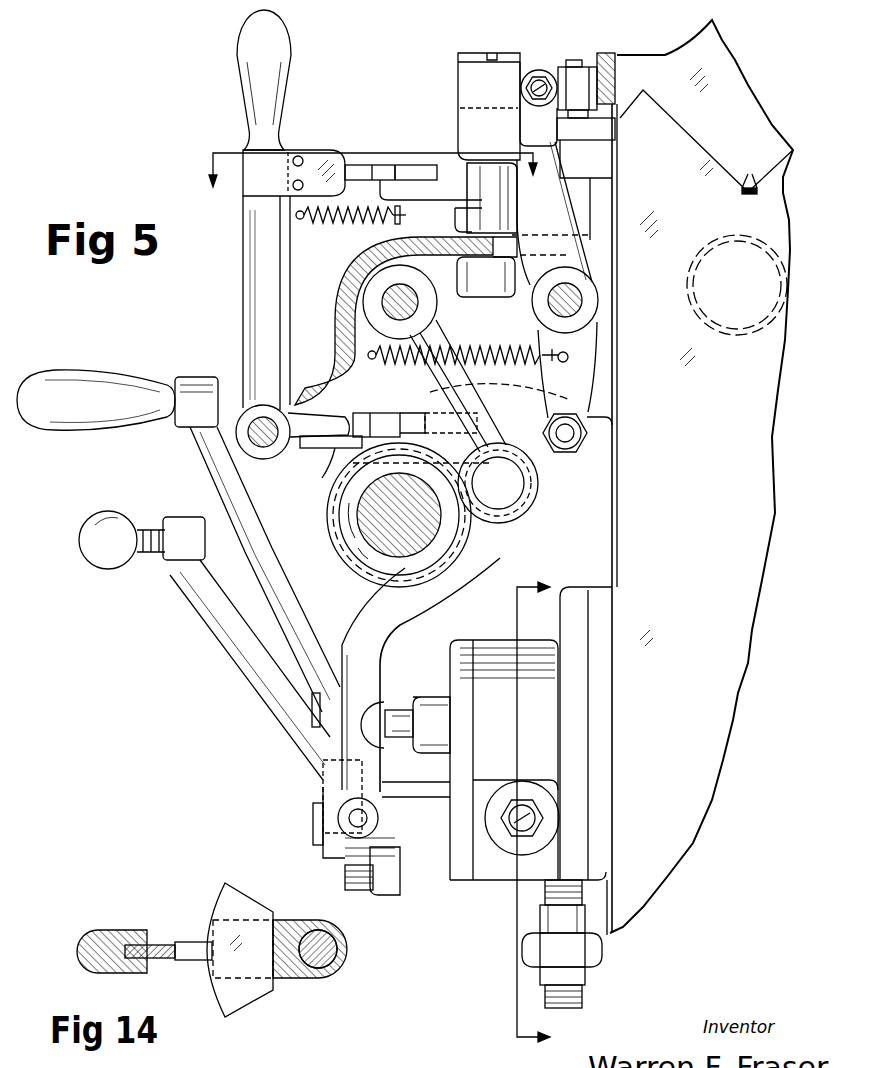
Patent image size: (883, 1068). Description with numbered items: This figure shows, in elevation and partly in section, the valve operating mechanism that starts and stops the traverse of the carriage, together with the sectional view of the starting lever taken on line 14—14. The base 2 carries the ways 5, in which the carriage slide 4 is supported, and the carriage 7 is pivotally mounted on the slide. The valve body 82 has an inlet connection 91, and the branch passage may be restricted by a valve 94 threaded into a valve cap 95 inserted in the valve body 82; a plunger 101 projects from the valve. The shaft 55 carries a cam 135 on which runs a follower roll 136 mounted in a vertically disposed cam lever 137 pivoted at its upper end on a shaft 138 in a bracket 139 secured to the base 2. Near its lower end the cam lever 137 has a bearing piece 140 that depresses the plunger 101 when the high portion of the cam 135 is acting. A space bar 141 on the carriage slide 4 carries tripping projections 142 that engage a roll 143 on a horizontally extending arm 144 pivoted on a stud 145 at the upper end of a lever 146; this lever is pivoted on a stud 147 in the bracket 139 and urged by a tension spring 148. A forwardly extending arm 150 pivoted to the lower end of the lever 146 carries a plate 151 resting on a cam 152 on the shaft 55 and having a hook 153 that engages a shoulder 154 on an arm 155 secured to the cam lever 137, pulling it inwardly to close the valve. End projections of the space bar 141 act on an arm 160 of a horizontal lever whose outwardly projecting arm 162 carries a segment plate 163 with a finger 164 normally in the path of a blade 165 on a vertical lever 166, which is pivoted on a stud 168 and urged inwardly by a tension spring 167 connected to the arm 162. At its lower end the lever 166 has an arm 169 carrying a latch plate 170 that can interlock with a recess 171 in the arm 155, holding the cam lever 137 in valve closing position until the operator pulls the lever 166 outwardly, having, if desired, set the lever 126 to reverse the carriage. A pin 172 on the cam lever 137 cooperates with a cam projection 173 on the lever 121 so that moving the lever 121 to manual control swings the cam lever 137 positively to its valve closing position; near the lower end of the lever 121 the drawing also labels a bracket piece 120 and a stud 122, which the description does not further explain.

In FIG. 5, the base 2 is at (733, 698).
In FIG. 5, the carriage slide 4 is at (757, 107).
In FIG. 5, the ways 5 is at (749, 172).
In FIG. 5, the carriage 7 is at (538, 814).
In FIG. 5, the section line 14- 14 is at (375, 180).
In FIG. 5, the shaft 55 is at (388, 535).
In FIG. 5, the valve body 82 is at (528, 787).
In FIG. 5, the inlet connection 91 is at (583, 1001).
In FIG. 5, the valve 94 is at (518, 806).
In FIG. 5, the valve cap 95 is at (548, 822).
In FIG. 5, the plunger 101 is at (398, 722).
In FIG. 5, the bracket 120 is at (311, 838).
In FIG. 5, the lever 121 is at (298, 726).
In FIG. 5, the stud 122 is at (347, 876).
In FIG. 5, the lever 126 is at (213, 473).
In FIG. 5, the cam 135 is at (438, 582).
In FIG. 5, the follower roll 136 is at (514, 497).
In FIG. 5, the cam lever 137 is at (500, 540).
In FIG. 5, the shaft 138 is at (395, 300).
In FIG. 5, the bracket 139 is at (349, 320).
In FIG. 5, the bearing piece 140 is at (376, 712).
In FIG. 5, the space bar 141 is at (609, 55).
In FIG. 5, the tripping projections 142 is at (593, 58).
In FIG. 5, the roll 143 is at (580, 94).
In FIG. 5, the arm 144 is at (523, 76).
In FIG. 5, the stud 145 is at (483, 55).
In FIG. 5, the lever 146 is at (552, 164).
In FIG. 5, the stud 147 is at (577, 302).
In FIG. 5, the tension spring 148 is at (500, 350).
In FIG. 5, the arm 150 is at (518, 393).
In FIG. 5, the plate 151 is at (362, 424).
In FIG. 5, the cam 152 is at (327, 510).
In FIG. 5, the hook 153 is at (387, 423).
In FIG. 5, the shoulder 154 is at (426, 412).
In FIG. 5, the arm 155 is at (538, 466).
In FIG. 5, the arm 160 is at (598, 132).
In FIG. 5, the arm 162 is at (453, 175).
In FIG. 14, the arm 162 is at (287, 972).
In FIG. 5, the segment plate 163 is at (407, 172).
In FIG. 14, the segment plate 163 is at (252, 990).
In FIG. 5, the finger 164 is at (362, 168).
In FIG. 14, the finger 164 is at (190, 960).
In FIG. 5, the blade 165 is at (327, 150).
In FIG. 14, the blade 165 is at (167, 944).
In FIG. 5, the lever 166 is at (262, 115).
In FIG. 14, the lever 166 is at (112, 938).
In FIG. 5, the tension spring 167 is at (333, 224).
In FIG. 5, the stud 168 is at (258, 430).
In FIG. 5, the arm 169 is at (318, 425).
In FIG. 5, the latch plate 170 is at (330, 449).
In FIG. 5, the recess 171 is at (330, 466).
In FIG. 5, the pin 172 is at (352, 819).
In FIG. 5, the cam projection 173 is at (340, 793).